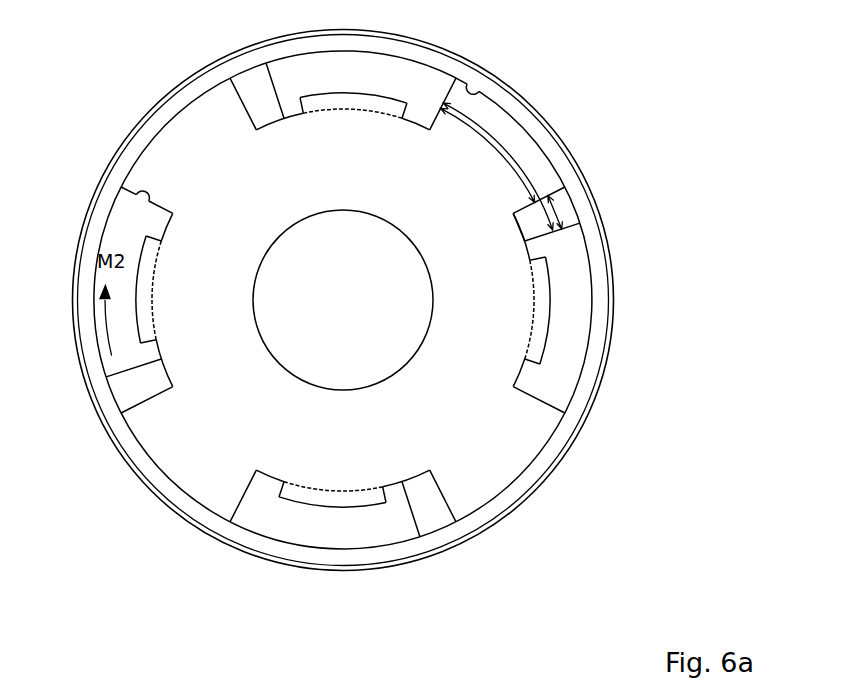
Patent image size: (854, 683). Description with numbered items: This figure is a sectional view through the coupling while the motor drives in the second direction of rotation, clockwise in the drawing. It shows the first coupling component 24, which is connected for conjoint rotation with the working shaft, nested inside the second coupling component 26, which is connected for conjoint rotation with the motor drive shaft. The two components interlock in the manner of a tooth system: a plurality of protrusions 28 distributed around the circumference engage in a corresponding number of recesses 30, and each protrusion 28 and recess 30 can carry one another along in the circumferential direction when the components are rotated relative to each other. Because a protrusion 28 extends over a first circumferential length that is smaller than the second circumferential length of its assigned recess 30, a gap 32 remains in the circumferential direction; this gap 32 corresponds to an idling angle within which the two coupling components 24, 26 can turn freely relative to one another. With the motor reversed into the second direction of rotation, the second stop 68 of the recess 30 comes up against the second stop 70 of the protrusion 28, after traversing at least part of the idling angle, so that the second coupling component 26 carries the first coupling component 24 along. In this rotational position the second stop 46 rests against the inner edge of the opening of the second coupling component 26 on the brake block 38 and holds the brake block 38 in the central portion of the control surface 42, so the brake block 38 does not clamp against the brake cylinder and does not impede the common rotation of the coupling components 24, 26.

The first coupling component 24 is at (493, 291).
The second coupling component 26 is at (595, 286).
The protrusion 28 is at (527, 155).
The recess 30 is at (475, 94).
The gap 32 is at (557, 212).
The second stop 68 is at (148, 203).
The second stop 70 is at (163, 210).
The brake block 38 is at (346, 682).
The control surface 42 is at (238, 671).
The second stop 46 is at (408, 682).